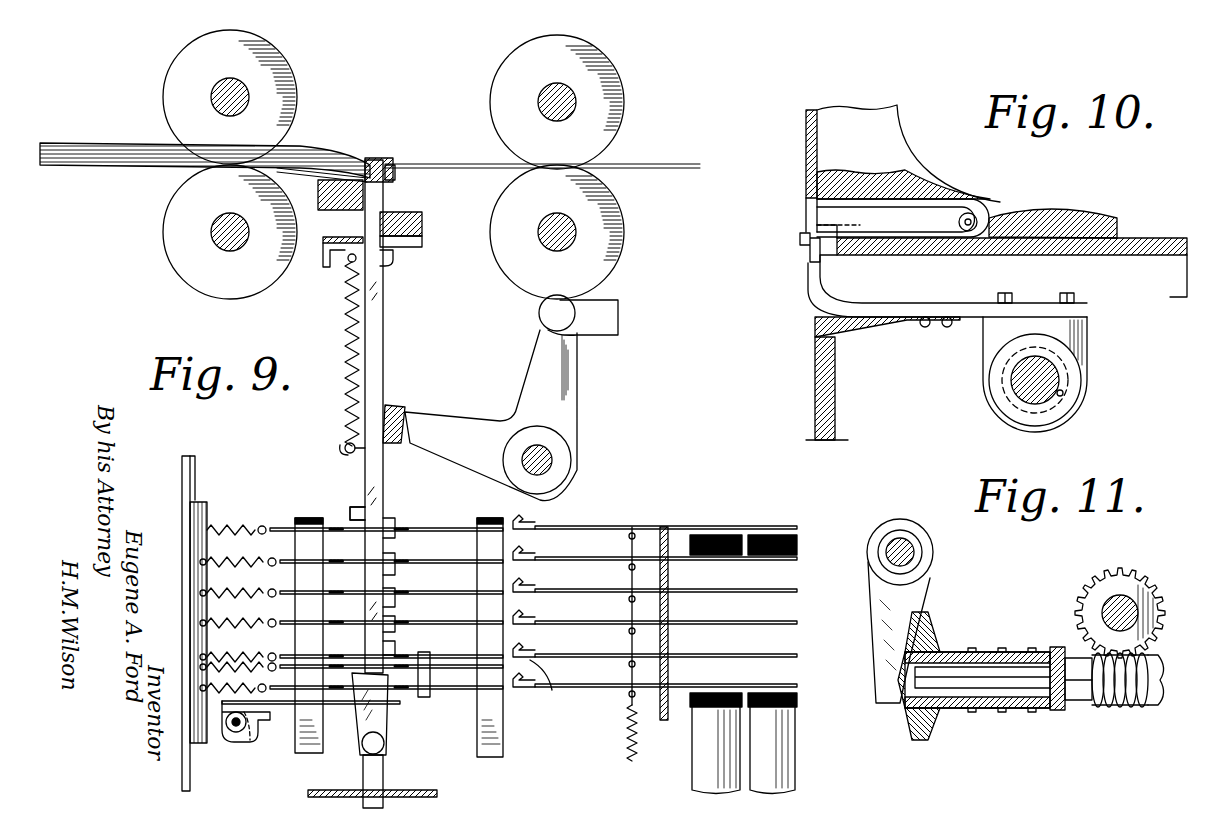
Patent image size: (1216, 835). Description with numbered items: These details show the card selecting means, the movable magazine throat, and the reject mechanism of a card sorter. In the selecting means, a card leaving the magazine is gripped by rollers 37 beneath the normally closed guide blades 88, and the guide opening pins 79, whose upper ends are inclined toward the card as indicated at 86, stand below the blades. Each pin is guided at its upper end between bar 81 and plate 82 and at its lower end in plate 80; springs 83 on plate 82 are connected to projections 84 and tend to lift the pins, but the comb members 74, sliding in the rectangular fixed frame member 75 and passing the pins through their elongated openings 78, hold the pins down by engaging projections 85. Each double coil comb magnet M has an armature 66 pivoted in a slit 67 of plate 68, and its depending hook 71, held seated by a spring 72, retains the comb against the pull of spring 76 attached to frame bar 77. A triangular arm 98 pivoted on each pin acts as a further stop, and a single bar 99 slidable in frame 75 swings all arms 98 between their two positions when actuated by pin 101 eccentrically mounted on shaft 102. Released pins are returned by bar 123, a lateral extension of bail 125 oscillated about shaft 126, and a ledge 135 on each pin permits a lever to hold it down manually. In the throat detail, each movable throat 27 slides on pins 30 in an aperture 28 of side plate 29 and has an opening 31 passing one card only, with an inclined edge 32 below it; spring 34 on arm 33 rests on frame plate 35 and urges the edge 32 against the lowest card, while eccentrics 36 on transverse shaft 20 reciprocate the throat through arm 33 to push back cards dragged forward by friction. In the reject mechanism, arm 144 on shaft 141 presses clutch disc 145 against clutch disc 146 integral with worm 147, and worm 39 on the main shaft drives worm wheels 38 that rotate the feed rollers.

In FIG. 9, the rollers 37 is at (190, 207).
In FIG. 9, the guide blades 88 is at (315, 152).
In FIG. 9, the inclined upper end of guide-opening pin 86 is at (378, 162).
In FIG. 9, the bar 81 is at (422, 230).
In FIG. 9, the plate 82 is at (328, 262).
In FIG. 9, the springs 83 is at (345, 307).
In FIG. 9, the projections 84 is at (345, 448).
In FIG. 9, the ledge 135 is at (393, 260).
In FIG. 9, the bar 123 is at (396, 407).
In FIG. 9, the bail 125 is at (554, 382).
In FIG. 9, the shaft 126 is at (540, 458).
In FIG. 9, the frame bar 77 is at (188, 512).
In FIG. 9, the spring 76 is at (240, 593).
In FIG. 9, the elongated openings 78 is at (352, 520).
In FIG. 9, the guide opening pins 79 is at (378, 520).
In FIG. 9, the projections 85 is at (395, 560).
In FIG. 9, the comb members 74 is at (455, 600).
In FIG. 9, the fixed frame member 75 is at (312, 730).
In FIG. 9, the armatures 66 is at (585, 590).
In FIG. 9, the slits 67 is at (640, 590).
In FIG. 9, the plate 68 is at (668, 600).
In FIG. 9, the hooks 71 is at (540, 688).
In FIG. 9, the springs 72 is at (625, 740).
In FIG. 9, the plate 80 is at (430, 792).
In FIG. 9, the triangular arm 98 is at (382, 710).
In FIG. 9, the bar 99 is at (355, 710).
In FIG. 9, the pin 101 is at (235, 735).
In FIG. 9, the shaft 102 is at (252, 725).
In FIG. 9, the comb magnet M is at (775, 770).
In FIG. 10, the movable throats 27 is at (835, 207).
In FIG. 10, the apertures 28 is at (1020, 215).
In FIG. 10, the side plates 29 is at (930, 183).
In FIG. 10, the pins 30 is at (968, 222).
In FIG. 10, the opening 31 is at (820, 225).
In FIG. 10, the inclined edge 32 is at (808, 242).
In FIG. 10, the arm 33 is at (812, 278).
In FIG. 10, the spring 34 is at (878, 332).
In FIG. 10, the frame plate 35 is at (840, 428).
In FIG. 10, the transverse shaft 20 is at (1030, 390).
In FIG. 10, the eccentrics 36 is at (1062, 395).
In FIG. 11, the shaft 141 is at (905, 556).
In FIG. 11, the arm 144 is at (902, 600).
In FIG. 11, the clutch disc 145 is at (905, 712).
In FIG. 11, the clutch disc 146 is at (934, 712).
In FIG. 11, the worm 147 is at (1010, 710).
In FIG. 11, the worm 39 is at (1127, 700).
In FIG. 11, the worm wheels 38 is at (1098, 593).